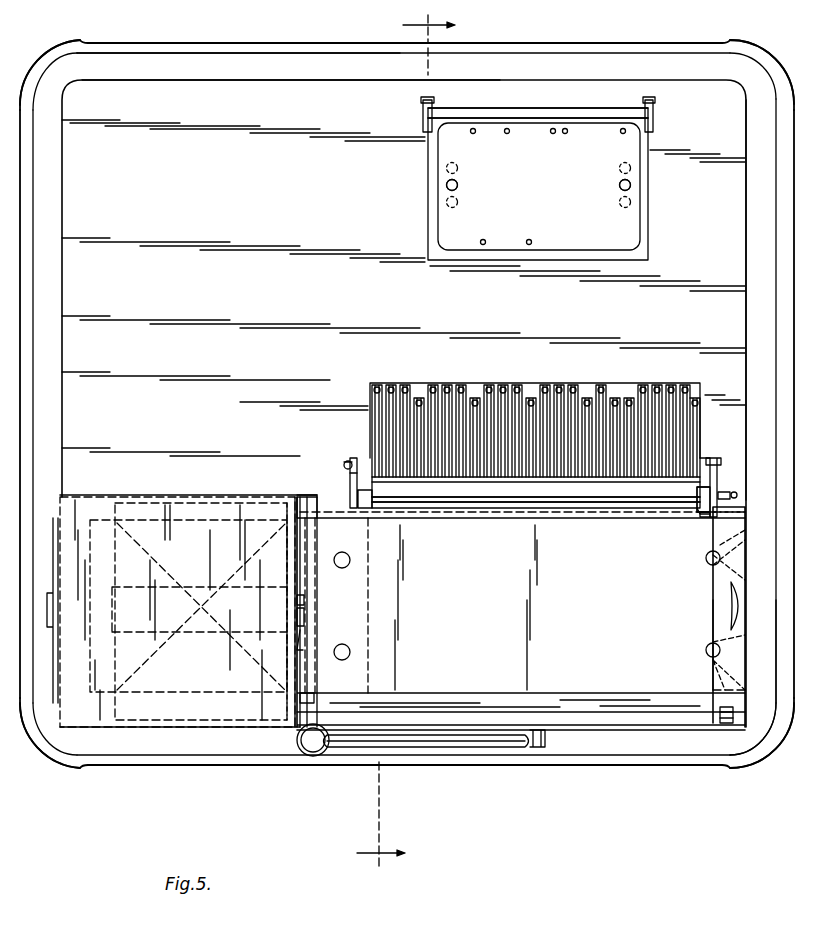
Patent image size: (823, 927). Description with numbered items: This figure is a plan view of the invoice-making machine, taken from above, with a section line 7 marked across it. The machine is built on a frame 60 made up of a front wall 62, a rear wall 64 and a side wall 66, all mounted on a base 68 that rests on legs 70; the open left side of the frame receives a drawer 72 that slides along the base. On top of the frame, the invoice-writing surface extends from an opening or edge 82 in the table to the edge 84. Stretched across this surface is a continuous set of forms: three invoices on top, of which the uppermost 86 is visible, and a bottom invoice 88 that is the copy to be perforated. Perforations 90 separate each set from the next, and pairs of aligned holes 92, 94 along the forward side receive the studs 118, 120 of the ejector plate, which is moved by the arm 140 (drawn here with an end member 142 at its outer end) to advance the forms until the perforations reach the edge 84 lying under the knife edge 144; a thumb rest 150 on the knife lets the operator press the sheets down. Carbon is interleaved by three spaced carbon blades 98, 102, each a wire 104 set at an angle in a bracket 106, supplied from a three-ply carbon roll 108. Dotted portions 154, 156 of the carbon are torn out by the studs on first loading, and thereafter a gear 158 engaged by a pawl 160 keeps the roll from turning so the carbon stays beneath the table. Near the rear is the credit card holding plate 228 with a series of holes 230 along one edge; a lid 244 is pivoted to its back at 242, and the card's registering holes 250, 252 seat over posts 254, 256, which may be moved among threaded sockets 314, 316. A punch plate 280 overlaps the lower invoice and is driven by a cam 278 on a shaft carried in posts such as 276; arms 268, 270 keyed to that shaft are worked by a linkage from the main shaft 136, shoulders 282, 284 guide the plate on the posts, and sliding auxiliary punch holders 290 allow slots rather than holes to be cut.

The section line 7- 7 is at (406, 445).
The frame 60 is at (62, 368).
The front wall 62 is at (632, 727).
The rear wall 64 is at (252, 80).
The side wall 66 is at (748, 312).
The base 68 is at (135, 65).
The legs 70 is at (50, 45).
The drawer 72 is at (80, 705).
The opening or edge 82 is at (314, 700).
The edge 84 is at (758, 690).
The uppermost invoice 86 is at (521, 612).
The bottom invoice 88 is at (355, 515).
The perforations 90 is at (368, 612).
The aligned holes 92 is at (345, 552).
The aligned holes 94 is at (706, 650).
The carbon blade 98 is at (142, 660).
The carbon blade 102 is at (180, 556).
The wire 104 is at (175, 632).
The bracket 106 is at (745, 495).
The carbon roll 108 is at (266, 611).
The stud 118 is at (712, 572).
The stud 120 is at (712, 665).
The main shaft 136 is at (538, 747).
The arm 140 is at (428, 747).
The roller 142 is at (318, 756).
The knife edge 144 is at (720, 627).
The thumb rest 150 is at (733, 607).
The carbon portion 154 is at (750, 520).
The carbon portion 156 is at (712, 693).
The gear 158 is at (304, 600).
The pawl 160 is at (305, 636).
The credit card holding plate 228 is at (432, 232).
The holes 230 is at (508, 128).
The pivot 242 is at (655, 103).
The credit card table lid 244 is at (606, 100).
The registering hole 250 is at (447, 189).
The registering hole 252 is at (630, 189).
The post 254 is at (446, 185).
The post 256 is at (631, 185).
The arm 268 is at (350, 458).
The arm 270 is at (718, 478).
The post 276 is at (700, 515).
The cam 278 is at (548, 512).
The punch plate 280 is at (478, 512).
The shoulder 282 is at (708, 480).
The shoulder 284 is at (700, 518).
The auxiliary punch holder 290 is at (408, 440).
The threaded socket 314 is at (458, 166).
The threaded socket 316 is at (458, 204).